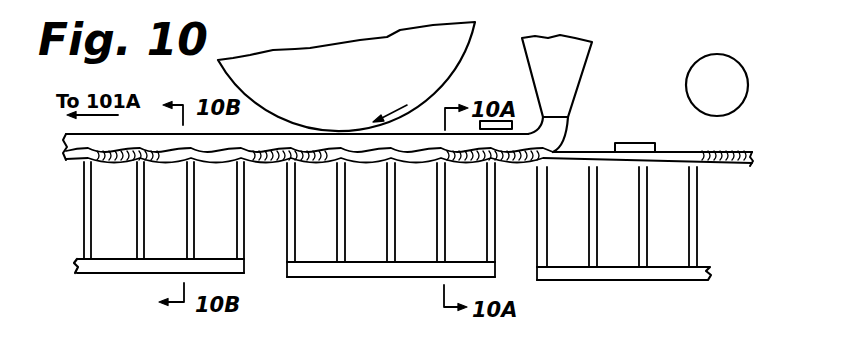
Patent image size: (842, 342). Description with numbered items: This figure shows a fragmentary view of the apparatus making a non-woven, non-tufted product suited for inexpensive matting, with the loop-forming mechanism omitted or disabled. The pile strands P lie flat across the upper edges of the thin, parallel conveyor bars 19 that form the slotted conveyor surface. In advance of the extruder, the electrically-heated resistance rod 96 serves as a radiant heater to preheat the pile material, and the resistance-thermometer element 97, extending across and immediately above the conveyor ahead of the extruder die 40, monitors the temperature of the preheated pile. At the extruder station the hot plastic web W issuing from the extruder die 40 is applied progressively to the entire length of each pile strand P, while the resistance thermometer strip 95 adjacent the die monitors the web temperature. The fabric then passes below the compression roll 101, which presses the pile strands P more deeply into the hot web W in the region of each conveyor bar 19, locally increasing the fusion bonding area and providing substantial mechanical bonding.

The compression roll 101 is at (408, 77).
The extruder die 40 is at (572, 70).
The electrically-heated resistance rod 96 is at (720, 67).
The resistance-thermometer element 97 is at (637, 143).
The resistance thermometer strip 95 is at (493, 130).
The conveyor bars 19 is at (340, 240).
The hot plastic web W is at (530, 142).
The pile strands P is at (588, 157).